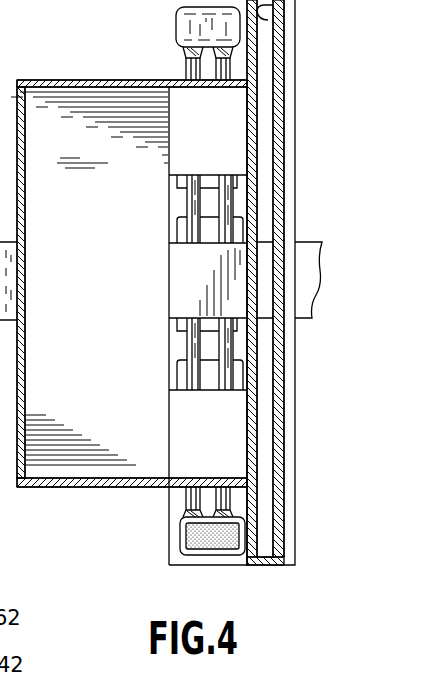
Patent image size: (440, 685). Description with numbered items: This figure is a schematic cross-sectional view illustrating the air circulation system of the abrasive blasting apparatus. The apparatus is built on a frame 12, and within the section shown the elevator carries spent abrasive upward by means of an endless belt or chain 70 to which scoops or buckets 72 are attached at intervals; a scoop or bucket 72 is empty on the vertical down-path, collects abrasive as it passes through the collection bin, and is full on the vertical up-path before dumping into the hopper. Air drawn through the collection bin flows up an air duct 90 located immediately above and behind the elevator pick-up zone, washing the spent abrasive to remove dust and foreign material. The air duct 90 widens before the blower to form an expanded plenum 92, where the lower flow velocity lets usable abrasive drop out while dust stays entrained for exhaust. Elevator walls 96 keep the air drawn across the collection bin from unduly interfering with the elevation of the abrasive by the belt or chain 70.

The frame 12 is at (305, 252).
The endless belt or chain 70 is at (190, 373).
The scoops or buckets 72 is at (186, 537).
The air duct 90 is at (265, 552).
The expanded plenum 92 is at (42, 102).
The elevator walls 96 is at (217, 88).